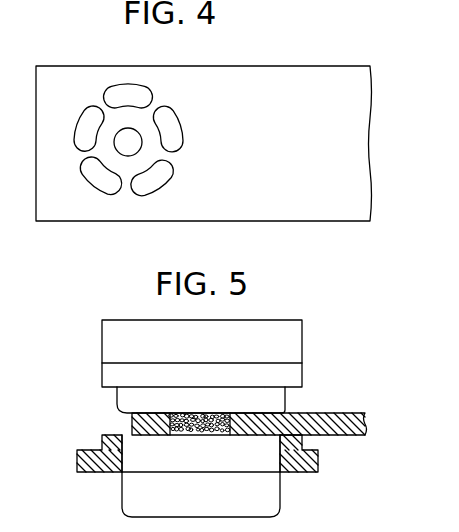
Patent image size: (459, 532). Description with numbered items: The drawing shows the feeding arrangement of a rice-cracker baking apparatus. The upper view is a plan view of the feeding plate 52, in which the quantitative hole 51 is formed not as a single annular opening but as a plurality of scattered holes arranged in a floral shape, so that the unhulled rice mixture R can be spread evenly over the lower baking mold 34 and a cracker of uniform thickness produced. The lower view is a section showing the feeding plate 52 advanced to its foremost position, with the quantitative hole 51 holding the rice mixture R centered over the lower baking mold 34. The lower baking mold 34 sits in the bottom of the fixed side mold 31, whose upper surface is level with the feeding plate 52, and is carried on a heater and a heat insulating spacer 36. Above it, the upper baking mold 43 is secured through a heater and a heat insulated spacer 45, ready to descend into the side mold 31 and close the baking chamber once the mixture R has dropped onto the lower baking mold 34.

In FIG. 4, the feeding plate 52 is at (248, 78).
In FIG. 5, the feeding plate 52 is at (350, 407).
In FIG. 4, the quantitative hole 51 is at (176, 122).
In FIG. 5, the quantitative hole 51 is at (174, 436).
In FIG. 5, the heat insulated spacer 45 is at (303, 350).
In FIG. 5, the upper baking mold 43 is at (285, 401).
In FIG. 5, the unhulled rice mixture R is at (210, 413).
In FIG. 5, the side mold 31 is at (110, 455).
In FIG. 5, the lower baking mold 34 is at (249, 457).
In FIG. 5, the heat insulating spacer 36 is at (272, 499).